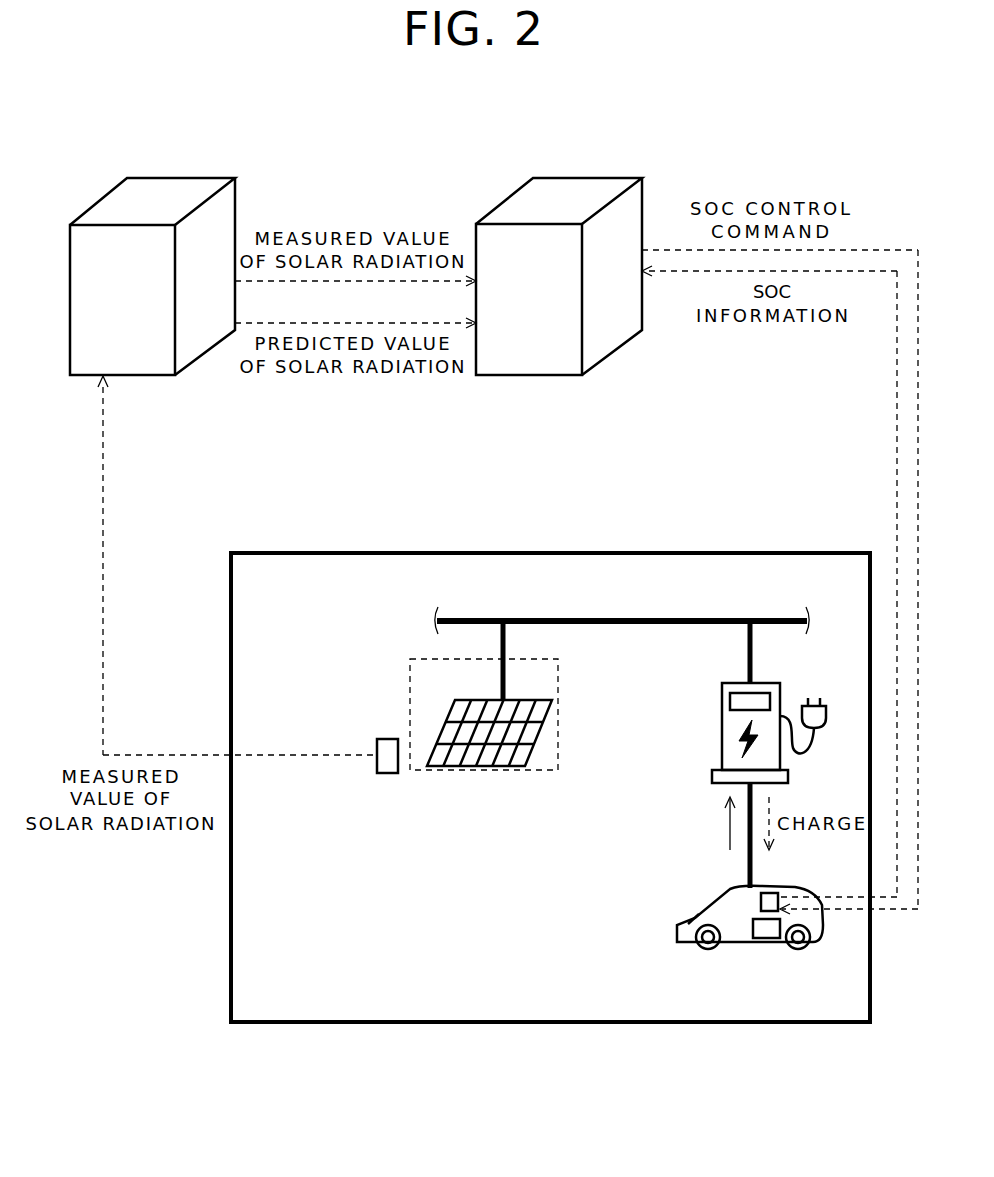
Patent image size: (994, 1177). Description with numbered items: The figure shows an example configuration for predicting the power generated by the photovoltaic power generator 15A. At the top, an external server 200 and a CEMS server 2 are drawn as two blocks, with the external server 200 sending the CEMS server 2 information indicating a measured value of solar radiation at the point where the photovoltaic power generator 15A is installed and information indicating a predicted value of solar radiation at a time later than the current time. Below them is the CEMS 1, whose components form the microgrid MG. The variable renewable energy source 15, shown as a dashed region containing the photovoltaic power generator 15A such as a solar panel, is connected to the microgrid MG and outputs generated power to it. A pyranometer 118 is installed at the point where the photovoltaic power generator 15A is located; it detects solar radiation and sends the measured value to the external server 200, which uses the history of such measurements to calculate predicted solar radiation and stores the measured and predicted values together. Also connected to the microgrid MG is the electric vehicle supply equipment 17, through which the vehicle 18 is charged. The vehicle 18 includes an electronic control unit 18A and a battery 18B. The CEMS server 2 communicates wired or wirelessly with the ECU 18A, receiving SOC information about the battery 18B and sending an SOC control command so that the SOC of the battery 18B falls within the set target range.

The CEMS 1 is at (692, 553).
The CEMS server 2 is at (600, 178).
The external server 200 is at (193, 178).
The microgrid MG is at (482, 604).
The variable renewable energy source 15 is at (545, 661).
The photovoltaic power generator 15A is at (540, 736).
The pyranometer 118 is at (398, 773).
The electric vehicle supply equipment 17 is at (780, 683).
The vehicle 18 is at (733, 890).
The electronic control unit 18A is at (771, 893).
The battery 18B is at (763, 938).